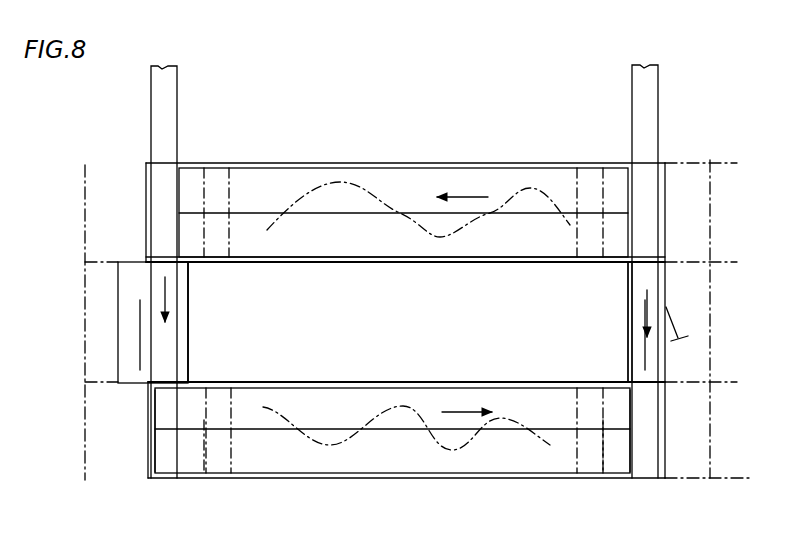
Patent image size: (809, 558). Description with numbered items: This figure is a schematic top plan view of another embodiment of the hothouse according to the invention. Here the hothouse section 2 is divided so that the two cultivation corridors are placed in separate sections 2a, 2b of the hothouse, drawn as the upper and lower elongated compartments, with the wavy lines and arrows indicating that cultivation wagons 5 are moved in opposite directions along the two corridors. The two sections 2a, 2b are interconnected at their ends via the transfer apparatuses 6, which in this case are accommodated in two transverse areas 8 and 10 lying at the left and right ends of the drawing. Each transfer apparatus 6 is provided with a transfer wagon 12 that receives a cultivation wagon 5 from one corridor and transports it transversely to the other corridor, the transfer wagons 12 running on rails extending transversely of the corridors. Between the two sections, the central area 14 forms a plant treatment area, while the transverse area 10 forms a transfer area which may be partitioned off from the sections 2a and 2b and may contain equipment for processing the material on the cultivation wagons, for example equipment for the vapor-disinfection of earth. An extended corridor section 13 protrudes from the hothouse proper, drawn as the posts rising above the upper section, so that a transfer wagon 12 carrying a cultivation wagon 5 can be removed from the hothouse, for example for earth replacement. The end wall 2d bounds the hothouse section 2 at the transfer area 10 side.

The hothouse section 2 is at (522, 161).
The hothouse section 2a is at (403, 186).
The hothouse section 2b is at (392, 459).
The end wall 2d is at (705, 322).
The cultivation wagon 5 is at (592, 240).
The transfer apparatus 6 is at (172, 342).
The transverse area 8 is at (151, 291).
The transverse area 10 is at (726, 344).
The transfer wagon 12 is at (412, 460).
The extended corridor section 13 is at (404, 271).
The plant treatment area 14 is at (271, 336).